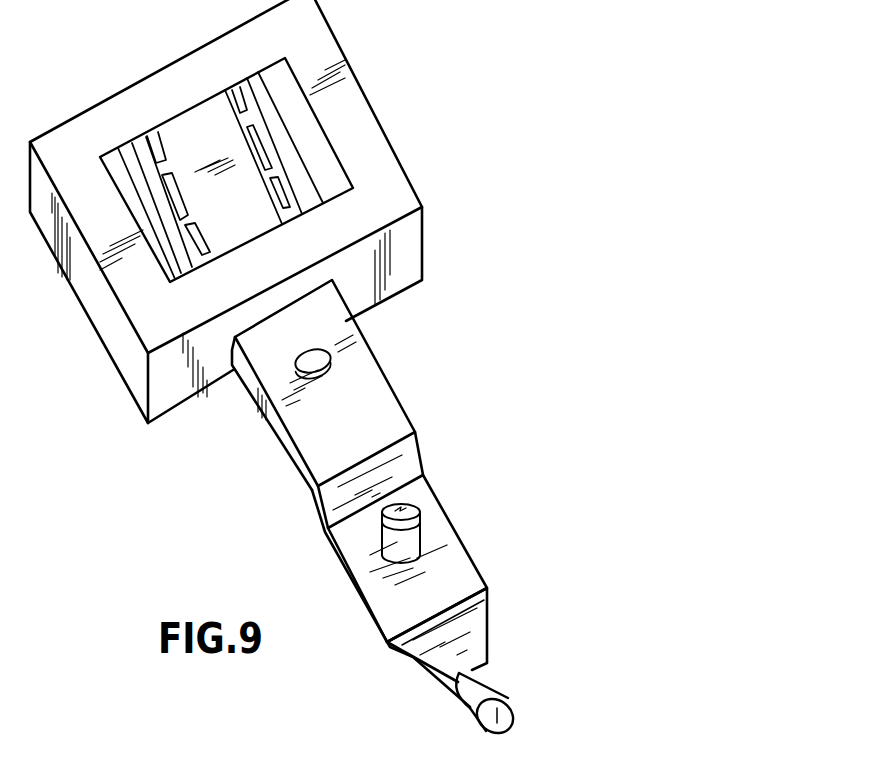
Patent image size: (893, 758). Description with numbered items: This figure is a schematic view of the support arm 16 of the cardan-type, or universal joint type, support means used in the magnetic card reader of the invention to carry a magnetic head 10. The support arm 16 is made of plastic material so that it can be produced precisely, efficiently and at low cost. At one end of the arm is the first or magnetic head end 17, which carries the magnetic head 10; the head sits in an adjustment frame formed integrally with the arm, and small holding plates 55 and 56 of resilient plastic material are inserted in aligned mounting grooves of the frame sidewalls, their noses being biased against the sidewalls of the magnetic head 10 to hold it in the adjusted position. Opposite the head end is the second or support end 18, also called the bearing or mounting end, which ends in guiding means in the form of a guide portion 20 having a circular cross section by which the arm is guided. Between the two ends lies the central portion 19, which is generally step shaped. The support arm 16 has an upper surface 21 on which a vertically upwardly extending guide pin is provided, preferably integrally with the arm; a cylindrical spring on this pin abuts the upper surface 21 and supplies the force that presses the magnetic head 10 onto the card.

The magnetic head 10 is at (195, 130).
The support arm 16 is at (390, 510).
The magnetic head end 17 is at (401, 165).
The support end 18 is at (488, 605).
The central portion 19 is at (430, 560).
The guide portion 20 is at (488, 688).
The upper surface 21 is at (317, 428).
The holding plate 55 is at (240, 83).
The holding plate 56 is at (131, 140).